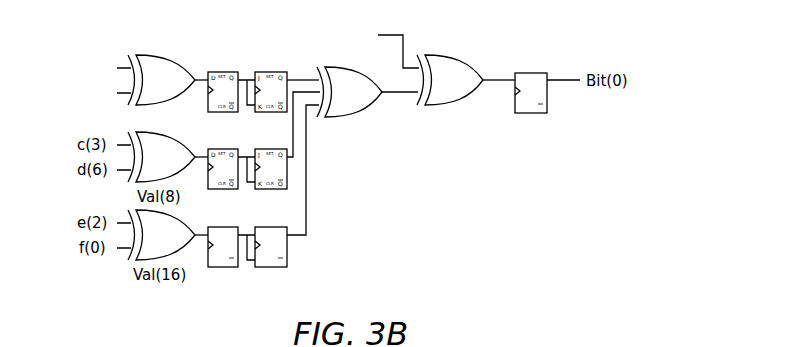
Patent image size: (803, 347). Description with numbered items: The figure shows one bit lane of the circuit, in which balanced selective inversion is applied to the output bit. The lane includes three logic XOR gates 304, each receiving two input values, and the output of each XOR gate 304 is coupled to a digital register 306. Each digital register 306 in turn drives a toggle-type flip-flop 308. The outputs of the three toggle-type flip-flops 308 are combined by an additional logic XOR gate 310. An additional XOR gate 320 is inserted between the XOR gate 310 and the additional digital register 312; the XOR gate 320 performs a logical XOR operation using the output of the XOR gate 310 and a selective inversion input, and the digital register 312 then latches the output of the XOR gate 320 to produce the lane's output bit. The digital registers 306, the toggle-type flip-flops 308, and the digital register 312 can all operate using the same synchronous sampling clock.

The logic XOR gate 304 is at (134, 57).
The digital register 306 is at (223, 267).
The toggle-type flip-flop 308 is at (289, 248).
The additional logic XOR gate 310 is at (353, 115).
The additional digital register 312 is at (532, 114).
The additional XOR gate 320 is at (448, 56).